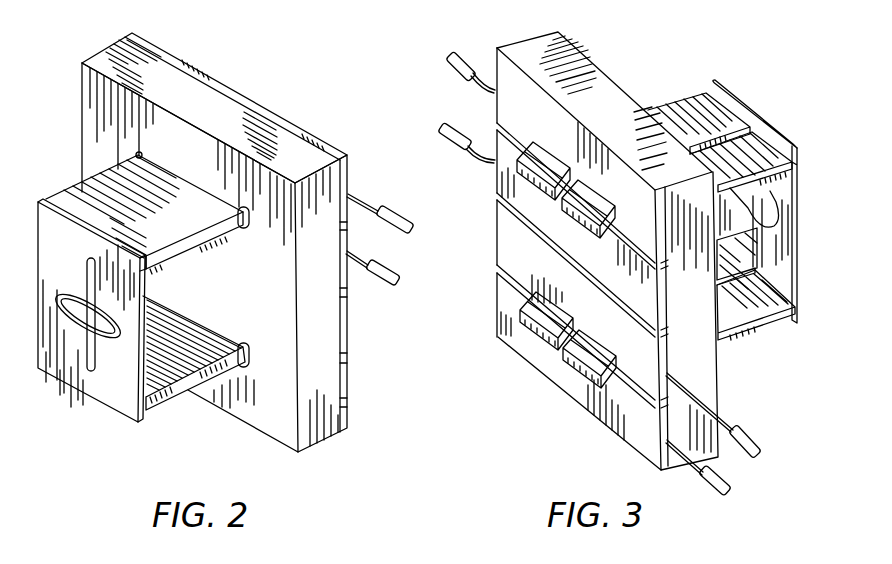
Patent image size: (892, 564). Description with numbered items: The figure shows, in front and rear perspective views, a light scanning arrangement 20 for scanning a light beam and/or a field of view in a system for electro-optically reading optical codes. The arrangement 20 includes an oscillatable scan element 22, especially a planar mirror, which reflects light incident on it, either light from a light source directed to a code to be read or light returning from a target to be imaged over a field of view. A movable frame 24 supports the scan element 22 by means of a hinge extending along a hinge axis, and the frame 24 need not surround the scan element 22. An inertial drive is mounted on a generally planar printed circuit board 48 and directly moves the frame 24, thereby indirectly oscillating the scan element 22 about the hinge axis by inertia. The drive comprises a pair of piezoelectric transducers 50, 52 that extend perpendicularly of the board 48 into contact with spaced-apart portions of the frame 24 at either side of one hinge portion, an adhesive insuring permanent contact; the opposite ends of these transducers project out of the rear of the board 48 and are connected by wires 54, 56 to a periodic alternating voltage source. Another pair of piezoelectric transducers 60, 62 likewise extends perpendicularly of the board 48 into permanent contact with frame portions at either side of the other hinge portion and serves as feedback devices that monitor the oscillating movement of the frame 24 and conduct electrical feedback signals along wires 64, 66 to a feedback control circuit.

In FIG. 2, the light scanning arrangement 20 is at (232, 244).
In FIG. 3, the light scanning arrangement 20 is at (596, 286).
In FIG. 2, the oscillatable scan element 22 is at (75, 352).
In FIG. 3, the oscillatable scan element 22 is at (757, 305).
In FIG. 2, the movable frame 24 is at (147, 279).
In FIG. 3, the movable frame 24 is at (790, 215).
In FIG. 2, the printed circuit board 48 is at (243, 113).
In FIG. 3, the printed circuit board 48 is at (590, 78).
In FIG. 2, the piezoelectric transducer 50 is at (85, 195).
In FIG. 3, the piezoelectric transducer 50 is at (762, 143).
In FIG. 2, the piezoelectric transducer 52 is at (222, 220).
In FIG. 3, the piezoelectric transducer 52 is at (703, 105).
In FIG. 2, the wire 54 is at (400, 208).
In FIG. 3, the wire 54 is at (462, 62).
In FIG. 2, the wire 56 is at (382, 285).
In FIG. 3, the wire 56 is at (450, 127).
In FIG. 3, the piezoelectric transducer 60 is at (783, 292).
In FIG. 2, the piezoelectric transducer 62 is at (177, 378).
In FIG. 3, the wire 64 is at (758, 447).
In FIG. 3, the wire 66 is at (735, 487).